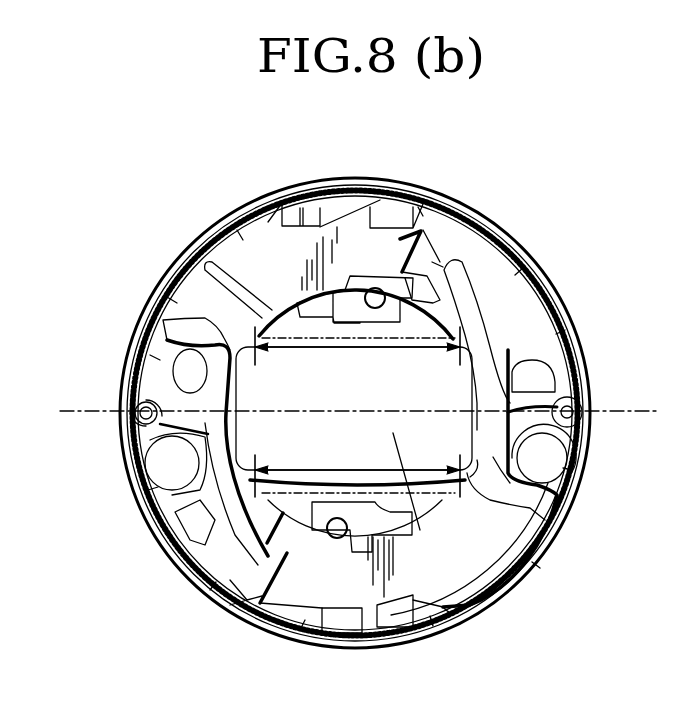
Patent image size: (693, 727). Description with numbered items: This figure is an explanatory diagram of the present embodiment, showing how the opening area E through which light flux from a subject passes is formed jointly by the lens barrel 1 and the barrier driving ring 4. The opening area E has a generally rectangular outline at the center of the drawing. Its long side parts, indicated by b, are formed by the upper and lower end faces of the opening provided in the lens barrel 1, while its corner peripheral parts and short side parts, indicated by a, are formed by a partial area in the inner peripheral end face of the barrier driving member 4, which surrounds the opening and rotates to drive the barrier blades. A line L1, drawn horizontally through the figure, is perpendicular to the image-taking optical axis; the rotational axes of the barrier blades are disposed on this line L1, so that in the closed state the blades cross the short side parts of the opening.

The lens barrel 1 is at (222, 222).
The barrier driving ring 4 is at (410, 242).
The short side parts of the opening area a is at (173, 313).
The long side parts of the opening area b is at (350, 470).
The opening area E is at (493, 600).
The line perpendicular to the image-taking optical axis L1 is at (615, 410).